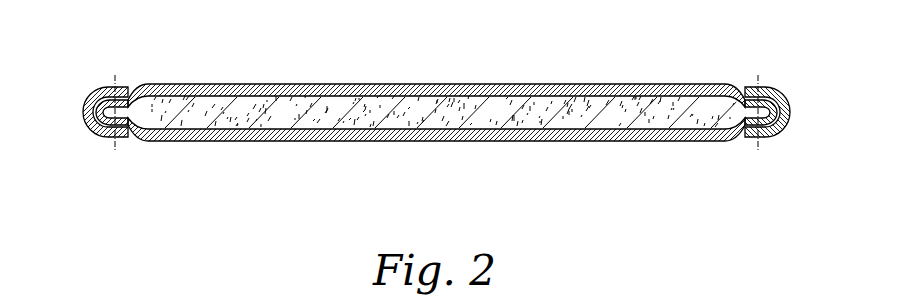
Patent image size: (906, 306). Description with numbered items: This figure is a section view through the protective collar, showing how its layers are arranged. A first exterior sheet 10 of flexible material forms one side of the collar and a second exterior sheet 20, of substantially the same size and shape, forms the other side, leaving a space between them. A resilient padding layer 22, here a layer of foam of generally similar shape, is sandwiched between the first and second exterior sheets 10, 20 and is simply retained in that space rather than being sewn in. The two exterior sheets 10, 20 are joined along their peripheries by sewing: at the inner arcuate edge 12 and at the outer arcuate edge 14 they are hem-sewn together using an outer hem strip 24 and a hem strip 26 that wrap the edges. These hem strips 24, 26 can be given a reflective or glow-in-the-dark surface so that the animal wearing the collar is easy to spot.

The first exterior sheet 10 is at (373, 84).
The inner arcuate edge 12 is at (84, 113).
The outer arcuate edge 14 is at (795, 113).
The second exterior sheet 20 is at (272, 141).
The resilient padding layer 22 is at (485, 110).
The outer hem strip 24 is at (765, 87).
The hem strip 26 is at (100, 86).